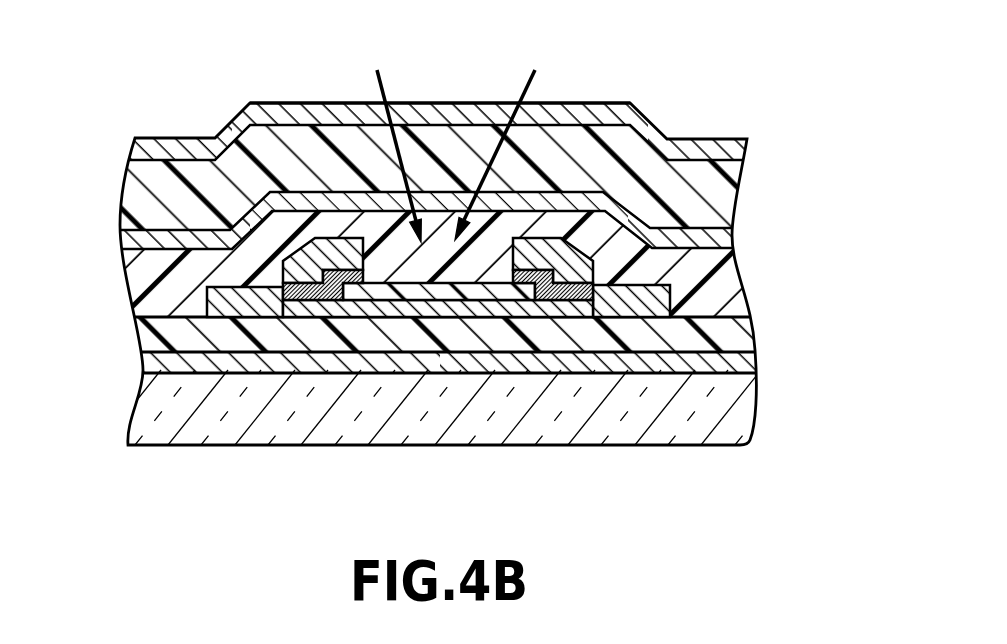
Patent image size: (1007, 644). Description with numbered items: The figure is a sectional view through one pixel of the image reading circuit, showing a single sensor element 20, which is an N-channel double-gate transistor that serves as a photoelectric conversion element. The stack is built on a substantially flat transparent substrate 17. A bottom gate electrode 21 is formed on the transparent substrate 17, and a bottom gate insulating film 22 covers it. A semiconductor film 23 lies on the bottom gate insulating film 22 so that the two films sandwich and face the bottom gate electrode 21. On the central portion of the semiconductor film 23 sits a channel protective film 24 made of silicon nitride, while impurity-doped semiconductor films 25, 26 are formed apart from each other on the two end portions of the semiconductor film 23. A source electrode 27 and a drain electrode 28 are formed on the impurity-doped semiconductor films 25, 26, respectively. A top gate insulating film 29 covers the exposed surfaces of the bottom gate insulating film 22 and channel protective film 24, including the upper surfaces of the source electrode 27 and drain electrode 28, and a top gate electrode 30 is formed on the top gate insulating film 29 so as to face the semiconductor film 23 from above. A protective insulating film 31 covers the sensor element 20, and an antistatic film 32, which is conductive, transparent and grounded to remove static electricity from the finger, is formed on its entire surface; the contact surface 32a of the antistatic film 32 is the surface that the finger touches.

The transparent substrate 17 is at (680, 413).
The sensor element 20 is at (707, 95).
The bottom gate electrode 21 is at (697, 364).
The bottom gate insulating film 22 is at (700, 331).
The semiconductor film 23 is at (477, 297).
The channel protective film 24 is at (407, 306).
The impurity-doped semiconductor film 25 is at (580, 297).
The impurity-doped semiconductor film 26 is at (323, 297).
The source electrode 27 is at (630, 303).
The drain electrode 28 is at (248, 298).
The top gate insulating film 29 is at (688, 278).
The top gate electrode 30 is at (697, 239).
The protective insulating film 31 is at (700, 207).
The antistatic film 32 is at (702, 146).
The contact surface 32a is at (327, 103).